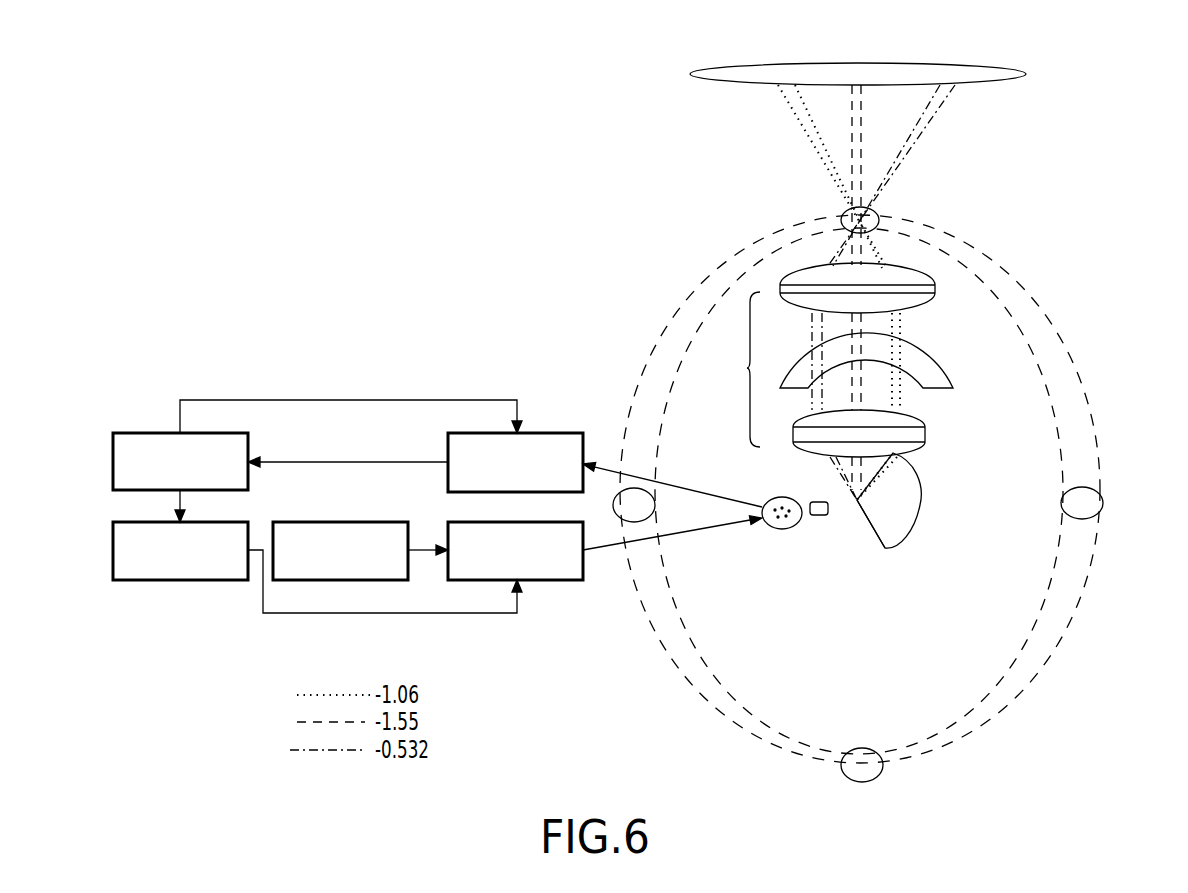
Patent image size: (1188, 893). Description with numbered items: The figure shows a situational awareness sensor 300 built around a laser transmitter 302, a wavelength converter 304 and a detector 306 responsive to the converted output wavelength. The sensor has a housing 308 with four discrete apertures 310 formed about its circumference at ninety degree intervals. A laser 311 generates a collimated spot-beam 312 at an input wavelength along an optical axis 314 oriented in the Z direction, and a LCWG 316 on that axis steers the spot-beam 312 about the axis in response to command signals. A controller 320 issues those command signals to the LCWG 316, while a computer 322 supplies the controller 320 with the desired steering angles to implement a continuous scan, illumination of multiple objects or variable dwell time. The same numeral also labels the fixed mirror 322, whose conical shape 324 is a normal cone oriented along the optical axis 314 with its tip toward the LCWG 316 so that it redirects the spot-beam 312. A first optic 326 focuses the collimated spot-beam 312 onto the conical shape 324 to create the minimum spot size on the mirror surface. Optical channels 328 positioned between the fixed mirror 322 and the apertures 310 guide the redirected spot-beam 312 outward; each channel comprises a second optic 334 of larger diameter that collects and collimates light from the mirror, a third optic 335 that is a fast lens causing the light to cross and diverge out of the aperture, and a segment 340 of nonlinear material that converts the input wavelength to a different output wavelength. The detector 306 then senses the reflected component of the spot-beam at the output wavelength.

The situational awareness sensor 300 is at (356, 267).
The laser transmitter 302 is at (235, 355).
The wavelength converter 304 is at (975, 330).
The detector 306 is at (542, 432).
The housing 308 is at (668, 318).
The apertures 310 is at (880, 215).
The laser 311 is at (385, 521).
The spot-beam 312 is at (700, 72).
The optical axis 314 is at (778, 530).
The LCWG 316 is at (556, 581).
The controller 320 is at (180, 581).
The computer / fixed mirror 322 is at (135, 433).
The conical shape 324 is at (874, 548).
The optic L1 326 is at (822, 516).
The optical channels 328 is at (871, 335).
The optic L2 334 is at (925, 440).
The optic L3 335 is at (915, 275).
The segment of NLM 340 is at (940, 372).